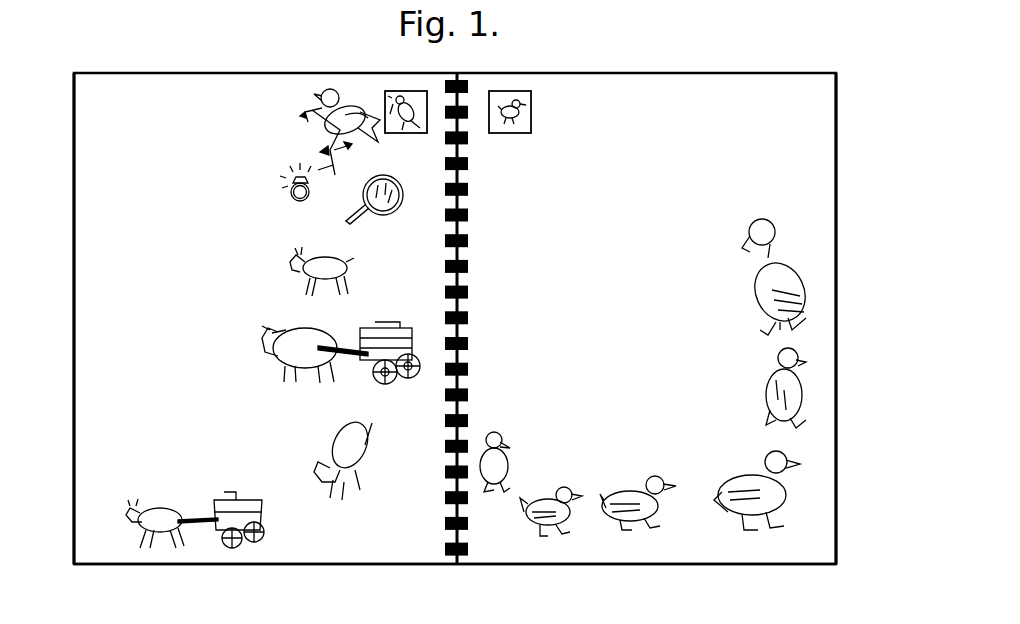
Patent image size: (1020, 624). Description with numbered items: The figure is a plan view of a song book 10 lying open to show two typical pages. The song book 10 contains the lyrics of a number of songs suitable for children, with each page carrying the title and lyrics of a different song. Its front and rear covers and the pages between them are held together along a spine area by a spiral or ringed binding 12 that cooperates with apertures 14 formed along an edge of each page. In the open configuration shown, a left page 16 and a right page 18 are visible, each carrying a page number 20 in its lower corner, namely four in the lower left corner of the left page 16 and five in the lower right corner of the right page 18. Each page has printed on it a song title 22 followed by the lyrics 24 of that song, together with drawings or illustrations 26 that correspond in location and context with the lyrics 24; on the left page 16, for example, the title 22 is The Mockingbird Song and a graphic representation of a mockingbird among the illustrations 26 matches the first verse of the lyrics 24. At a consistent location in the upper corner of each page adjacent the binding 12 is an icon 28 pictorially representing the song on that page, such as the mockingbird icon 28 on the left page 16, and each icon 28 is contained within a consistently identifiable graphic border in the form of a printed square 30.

The song book 10 is at (68, 216).
The spiral or ringed binding 12 is at (457, 520).
The apertures 14 is at (457, 520).
The left page 16 is at (73, 318).
The right page 18 is at (716, 72).
The page numbers 20 is at (110, 548).
The song title 22 is at (190, 116).
The lyrics 24 is at (126, 139).
The illustrations 26 is at (381, 215).
The icon 28 is at (386, 93).
The printed square 30 is at (405, 133).